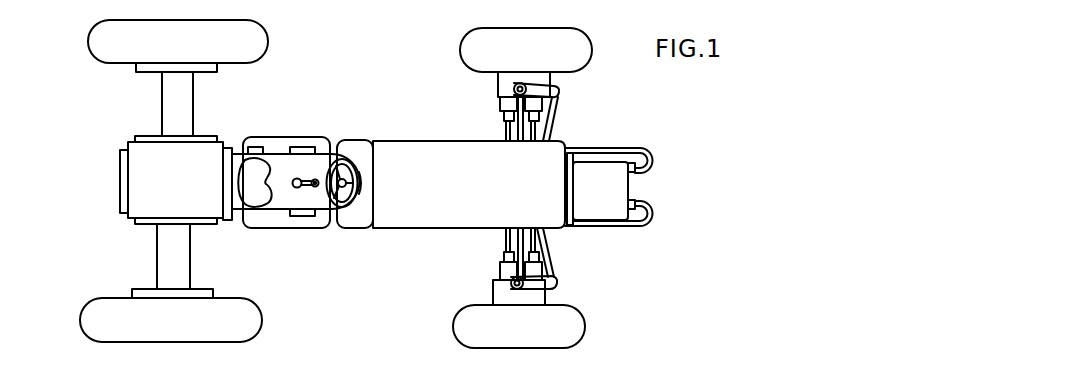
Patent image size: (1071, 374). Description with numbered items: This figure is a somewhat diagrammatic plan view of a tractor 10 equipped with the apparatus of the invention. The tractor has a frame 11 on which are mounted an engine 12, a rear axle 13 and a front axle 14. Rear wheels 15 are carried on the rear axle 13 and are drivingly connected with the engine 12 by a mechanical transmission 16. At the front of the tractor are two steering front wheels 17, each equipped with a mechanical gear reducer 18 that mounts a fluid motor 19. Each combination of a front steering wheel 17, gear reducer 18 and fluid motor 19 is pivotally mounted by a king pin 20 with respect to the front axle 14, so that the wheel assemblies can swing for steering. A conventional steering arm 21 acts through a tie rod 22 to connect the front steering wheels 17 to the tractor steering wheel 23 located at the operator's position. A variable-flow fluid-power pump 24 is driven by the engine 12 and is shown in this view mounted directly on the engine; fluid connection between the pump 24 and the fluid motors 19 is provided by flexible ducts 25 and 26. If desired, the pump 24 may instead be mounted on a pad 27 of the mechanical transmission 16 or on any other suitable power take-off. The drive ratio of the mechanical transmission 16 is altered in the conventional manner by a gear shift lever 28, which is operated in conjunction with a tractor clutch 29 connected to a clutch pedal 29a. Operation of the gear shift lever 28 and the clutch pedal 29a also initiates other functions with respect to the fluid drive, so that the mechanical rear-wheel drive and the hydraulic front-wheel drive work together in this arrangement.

The tractor 10 is at (401, 122).
The frame 11 is at (326, 140).
The engine 12 is at (463, 180).
The rear axle 13 is at (166, 105).
The front axle 14 is at (516, 127).
The rear wheels 15 is at (255, 35).
The mechanical transmission 16 is at (140, 178).
The steering front wheels 17 is at (580, 44).
The mechanical gear reducers 18 is at (526, 75).
The fluid motors 19 is at (502, 108).
The king pin 20 is at (514, 88).
The steering arm 21 is at (557, 92).
The tie rod 22 is at (548, 120).
The tractor steering wheel 23 is at (353, 160).
The variable-flow fluid-power pump 24 is at (591, 188).
The flexible duct 25 is at (648, 148).
The flexible duct 26 is at (648, 230).
The pad 27 is at (123, 196).
The gear shift lever 28 is at (304, 178).
The tractor clutch 29 is at (257, 146).
The clutch pedal 29a is at (296, 147).